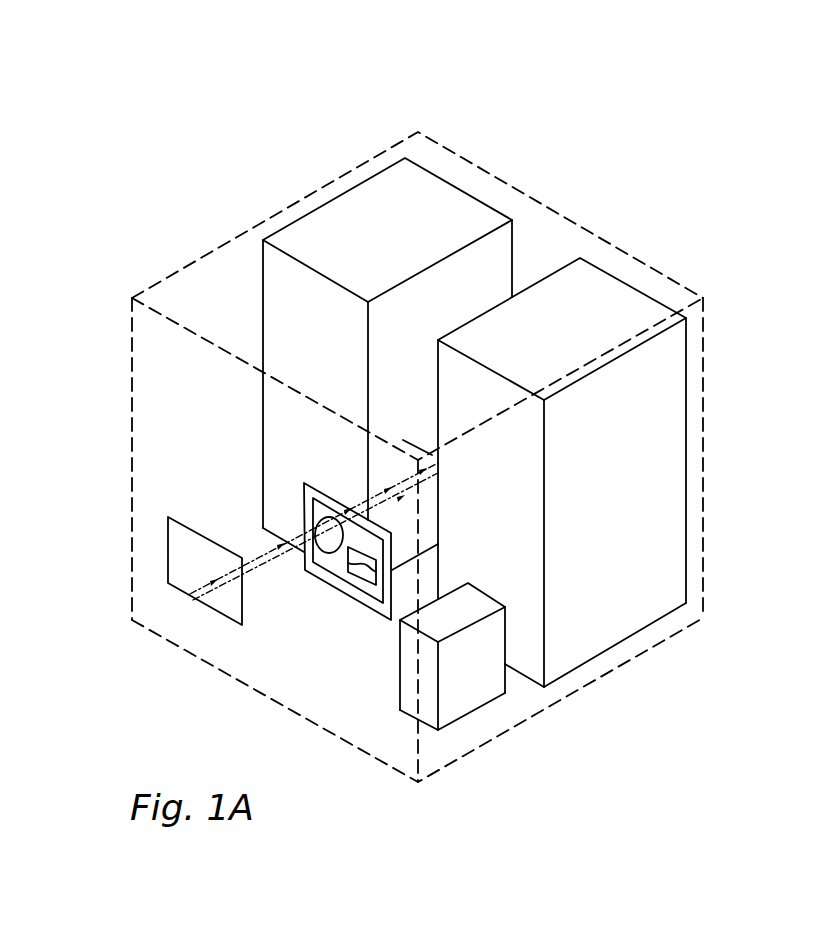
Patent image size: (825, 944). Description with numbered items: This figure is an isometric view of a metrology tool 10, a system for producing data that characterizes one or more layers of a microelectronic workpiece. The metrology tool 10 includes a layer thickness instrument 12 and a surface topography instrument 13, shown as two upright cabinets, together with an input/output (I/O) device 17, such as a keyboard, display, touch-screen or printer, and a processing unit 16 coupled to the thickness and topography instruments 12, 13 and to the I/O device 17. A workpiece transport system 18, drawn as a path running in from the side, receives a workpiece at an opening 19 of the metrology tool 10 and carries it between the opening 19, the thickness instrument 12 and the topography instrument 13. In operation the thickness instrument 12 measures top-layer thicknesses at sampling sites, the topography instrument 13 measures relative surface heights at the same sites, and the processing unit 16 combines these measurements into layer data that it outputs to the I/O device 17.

The metrology tool 10 is at (627, 157).
The layer thickness instrument 12 is at (313, 208).
The surface topography instrument 13 is at (686, 529).
The processing unit 16 is at (437, 688).
The input/output (I/O) device 17 is at (304, 483).
The workpiece transport system 18 is at (268, 562).
The opening 19 is at (193, 525).